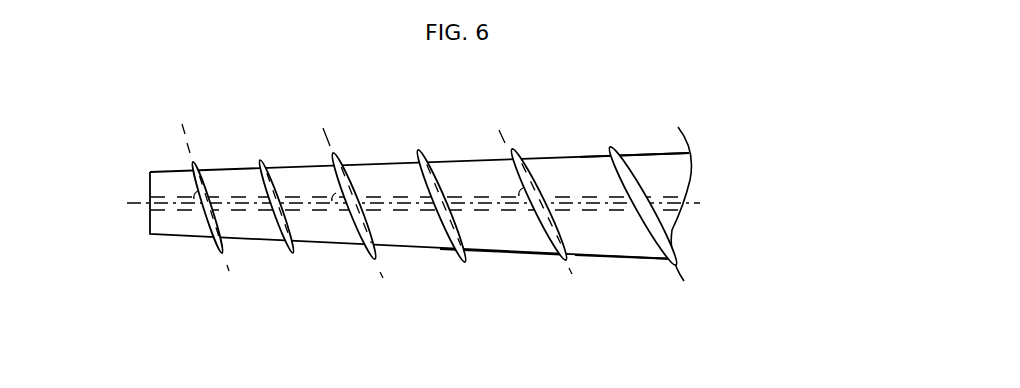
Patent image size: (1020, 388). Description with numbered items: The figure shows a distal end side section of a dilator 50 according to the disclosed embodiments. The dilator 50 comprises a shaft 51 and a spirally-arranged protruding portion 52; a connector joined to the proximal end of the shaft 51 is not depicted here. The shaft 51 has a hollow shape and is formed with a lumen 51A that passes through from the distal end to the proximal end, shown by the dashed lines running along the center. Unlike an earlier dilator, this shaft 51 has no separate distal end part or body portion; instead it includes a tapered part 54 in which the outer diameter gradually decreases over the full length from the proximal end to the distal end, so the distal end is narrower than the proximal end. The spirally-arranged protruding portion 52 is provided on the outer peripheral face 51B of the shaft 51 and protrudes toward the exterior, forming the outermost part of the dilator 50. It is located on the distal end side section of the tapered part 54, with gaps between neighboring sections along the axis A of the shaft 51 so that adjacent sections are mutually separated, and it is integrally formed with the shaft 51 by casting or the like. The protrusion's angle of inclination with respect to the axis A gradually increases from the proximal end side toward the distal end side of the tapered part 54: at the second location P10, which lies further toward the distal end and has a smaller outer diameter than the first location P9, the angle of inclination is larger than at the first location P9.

The dilator 50 is at (433, 191).
The shaft 51 is at (642, 131).
The lumen 51A is at (605, 208).
The outer peripheral face 51B is at (495, 251).
The spirally-arranged protruding portion 52 is at (611, 148).
The tapered part 54 is at (550, 166).
The axis A is at (137, 205).
The first location P9 is at (352, 155).
The second location P10 is at (207, 168).